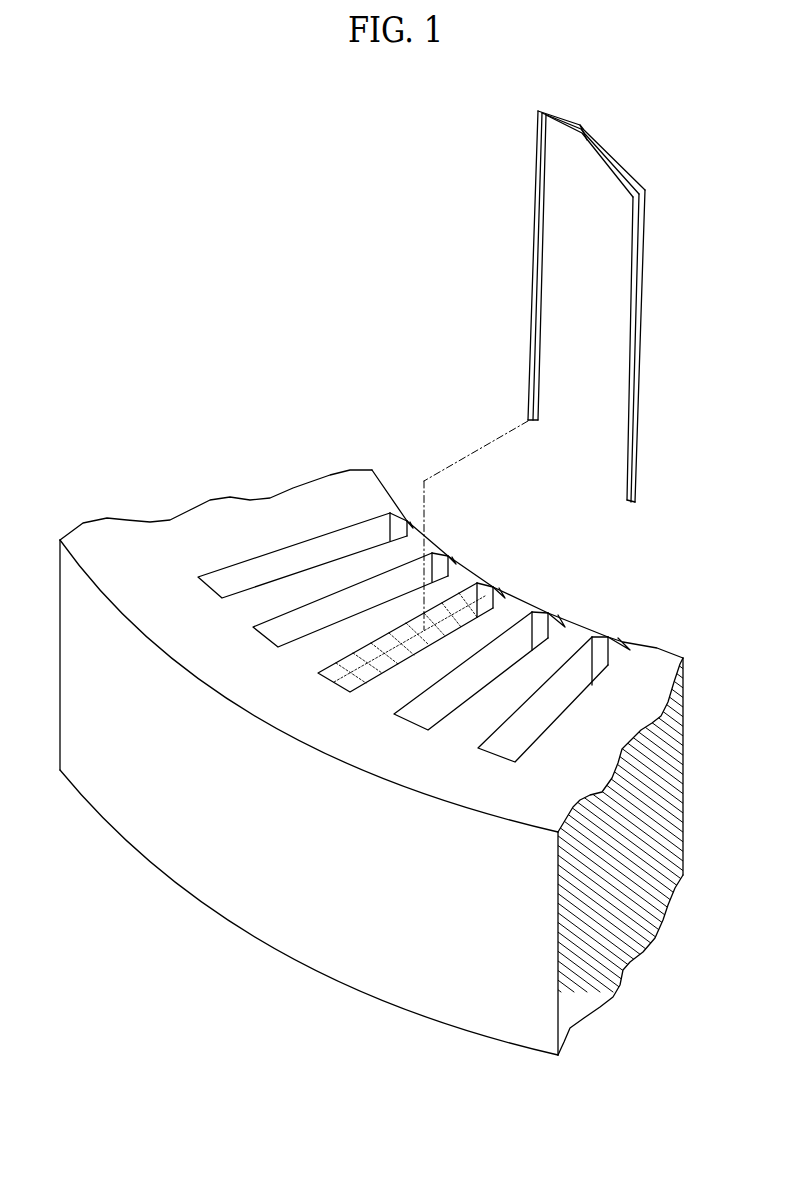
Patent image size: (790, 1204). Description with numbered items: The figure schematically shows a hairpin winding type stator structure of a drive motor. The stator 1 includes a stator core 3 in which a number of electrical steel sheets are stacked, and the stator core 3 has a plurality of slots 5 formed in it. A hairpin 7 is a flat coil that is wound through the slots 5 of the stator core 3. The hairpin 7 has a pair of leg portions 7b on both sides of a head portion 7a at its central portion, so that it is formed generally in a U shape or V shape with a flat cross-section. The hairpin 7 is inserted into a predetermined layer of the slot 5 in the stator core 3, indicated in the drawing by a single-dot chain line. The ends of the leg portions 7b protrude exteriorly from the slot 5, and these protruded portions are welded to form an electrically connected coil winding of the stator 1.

The stator 1 is at (269, 258).
The stator core 3 is at (143, 537).
The slot 5 is at (573, 690).
The hairpin 7 is at (521, 124).
The head portion 7a is at (624, 171).
The leg portion 7b is at (644, 293).